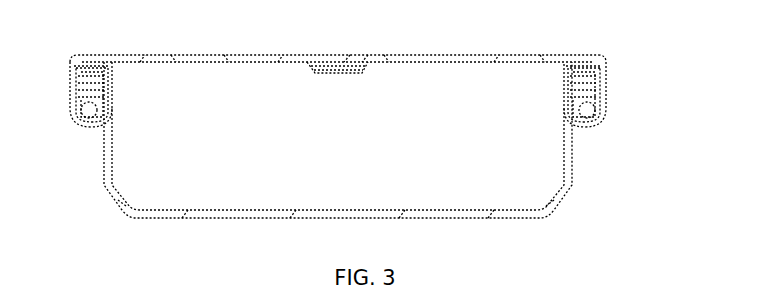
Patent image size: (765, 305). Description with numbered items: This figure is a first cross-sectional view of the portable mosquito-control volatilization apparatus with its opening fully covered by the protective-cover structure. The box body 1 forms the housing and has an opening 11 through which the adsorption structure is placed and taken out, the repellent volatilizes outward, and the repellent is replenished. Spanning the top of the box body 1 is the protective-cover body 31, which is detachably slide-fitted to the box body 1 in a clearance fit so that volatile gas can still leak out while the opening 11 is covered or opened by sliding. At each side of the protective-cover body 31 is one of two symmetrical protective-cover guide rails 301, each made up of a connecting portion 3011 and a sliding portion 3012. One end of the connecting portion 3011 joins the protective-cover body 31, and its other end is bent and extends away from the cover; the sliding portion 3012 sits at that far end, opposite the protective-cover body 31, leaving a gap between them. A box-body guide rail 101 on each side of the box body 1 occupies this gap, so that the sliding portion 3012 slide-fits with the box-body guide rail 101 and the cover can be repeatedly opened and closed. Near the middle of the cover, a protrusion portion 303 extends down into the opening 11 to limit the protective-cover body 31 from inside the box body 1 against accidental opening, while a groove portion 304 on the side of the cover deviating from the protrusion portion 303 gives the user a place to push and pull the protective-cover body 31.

The box body 1 is at (425, 219).
The opening 11 is at (190, 74).
The protective-cover body 31 is at (463, 62).
The box-body guide rail 101 is at (97, 77).
The protective-cover guide rail 301 is at (371, 101).
The connecting portion 3011 is at (72, 98).
The sliding portion 3012 is at (95, 121).
The protrusion portion 303 is at (322, 68).
The groove portion 304 is at (352, 58).